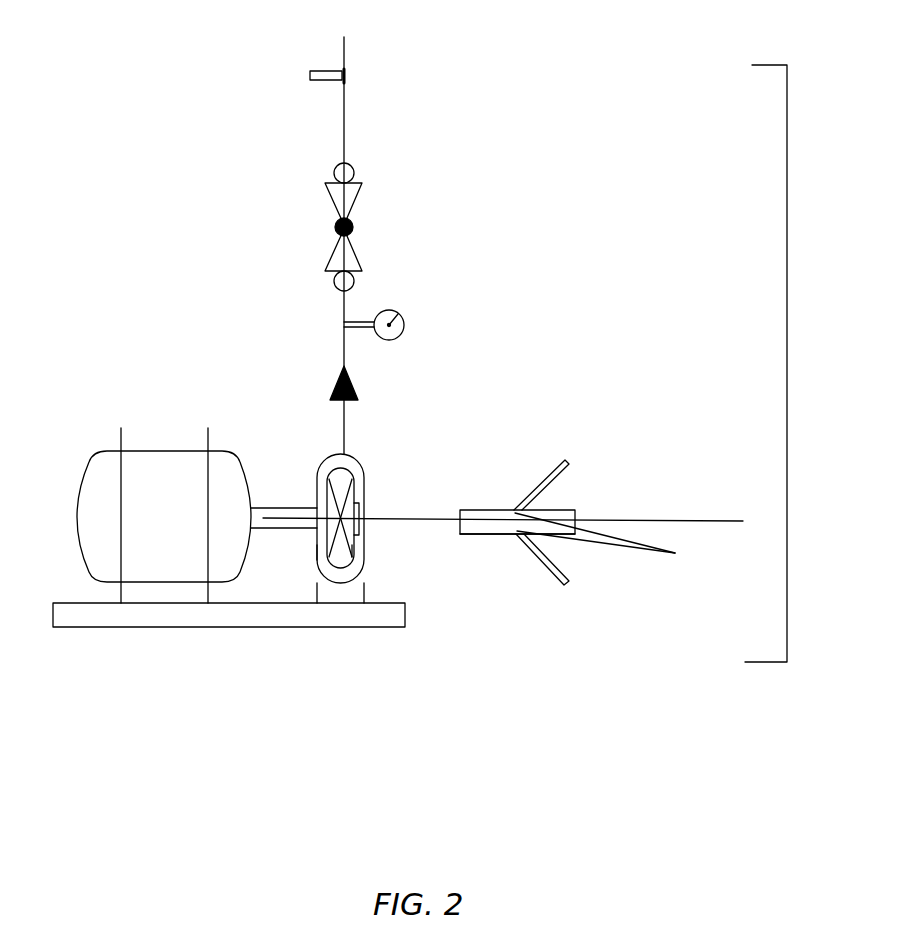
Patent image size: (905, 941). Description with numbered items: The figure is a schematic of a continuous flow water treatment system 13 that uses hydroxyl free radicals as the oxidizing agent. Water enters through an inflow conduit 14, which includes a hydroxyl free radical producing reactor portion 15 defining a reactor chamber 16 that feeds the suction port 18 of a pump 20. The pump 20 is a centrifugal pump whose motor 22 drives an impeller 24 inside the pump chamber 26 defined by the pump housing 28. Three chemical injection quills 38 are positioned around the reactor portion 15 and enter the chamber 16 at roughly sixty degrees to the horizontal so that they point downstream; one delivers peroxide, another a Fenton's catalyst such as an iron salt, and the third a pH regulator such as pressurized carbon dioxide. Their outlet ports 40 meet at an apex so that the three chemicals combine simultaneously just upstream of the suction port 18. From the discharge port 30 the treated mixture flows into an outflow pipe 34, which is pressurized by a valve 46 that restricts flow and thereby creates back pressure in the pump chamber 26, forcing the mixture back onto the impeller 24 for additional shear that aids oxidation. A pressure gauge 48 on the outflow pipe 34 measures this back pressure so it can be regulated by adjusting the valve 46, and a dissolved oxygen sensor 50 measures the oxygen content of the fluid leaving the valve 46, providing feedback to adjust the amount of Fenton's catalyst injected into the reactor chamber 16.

The water treatment system 13 is at (787, 381).
The inflow conduit 14 is at (667, 521).
The reactor portion 15 is at (483, 510).
The reactor chamber 16 is at (478, 526).
The suction port 18 is at (364, 518).
The pump 20 is at (418, 725).
The motor 22 is at (197, 515).
The impeller 24 is at (330, 478).
The pump chamber 26 is at (357, 550).
The pump housing 28 is at (318, 553).
The discharge port 30 is at (342, 455).
The outflow pipe 34 is at (341, 353).
The chemical injection quills 38 is at (566, 524).
The outlet ports 40 is at (616, 545).
The valve 46 is at (366, 227).
The pressure gauge 48 is at (402, 325).
The dissolved oxygen sensor 50 is at (320, 77).